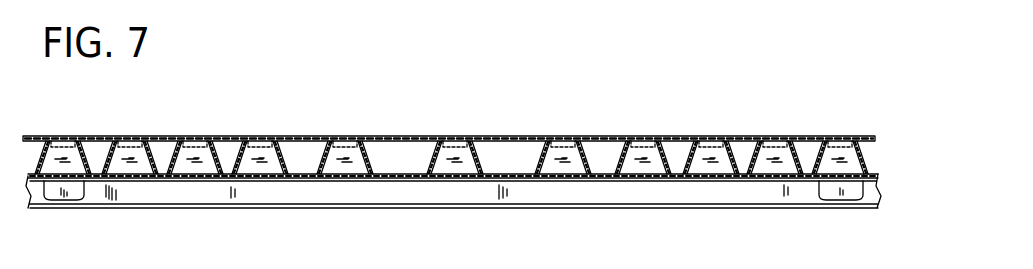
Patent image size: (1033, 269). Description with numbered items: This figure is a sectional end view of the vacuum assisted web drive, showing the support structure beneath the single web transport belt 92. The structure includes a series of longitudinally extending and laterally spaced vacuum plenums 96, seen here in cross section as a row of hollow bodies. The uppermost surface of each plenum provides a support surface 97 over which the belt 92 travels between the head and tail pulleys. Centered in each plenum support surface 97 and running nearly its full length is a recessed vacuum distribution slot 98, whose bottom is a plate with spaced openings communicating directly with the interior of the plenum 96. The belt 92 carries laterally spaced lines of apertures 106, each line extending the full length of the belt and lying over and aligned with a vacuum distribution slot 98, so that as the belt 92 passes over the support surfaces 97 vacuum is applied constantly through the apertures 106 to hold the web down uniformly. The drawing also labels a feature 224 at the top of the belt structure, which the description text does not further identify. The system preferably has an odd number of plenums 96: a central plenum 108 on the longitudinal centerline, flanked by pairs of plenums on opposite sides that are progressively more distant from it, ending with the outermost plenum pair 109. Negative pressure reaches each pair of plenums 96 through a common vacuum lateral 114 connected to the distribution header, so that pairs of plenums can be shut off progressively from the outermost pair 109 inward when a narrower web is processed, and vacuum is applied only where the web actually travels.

The web transport belt 92 is at (306, 129).
The vacuum plenums 96 is at (698, 176).
The support surface 97 is at (87, 160).
The vacuum distribution slot 98 is at (556, 137).
The apertures 106 is at (714, 137).
The central plenum 108 is at (466, 157).
The outermost plenum pair 109 is at (80, 164).
The vacuum lateral 114 is at (262, 197).
The top sheet 224 is at (364, 139).